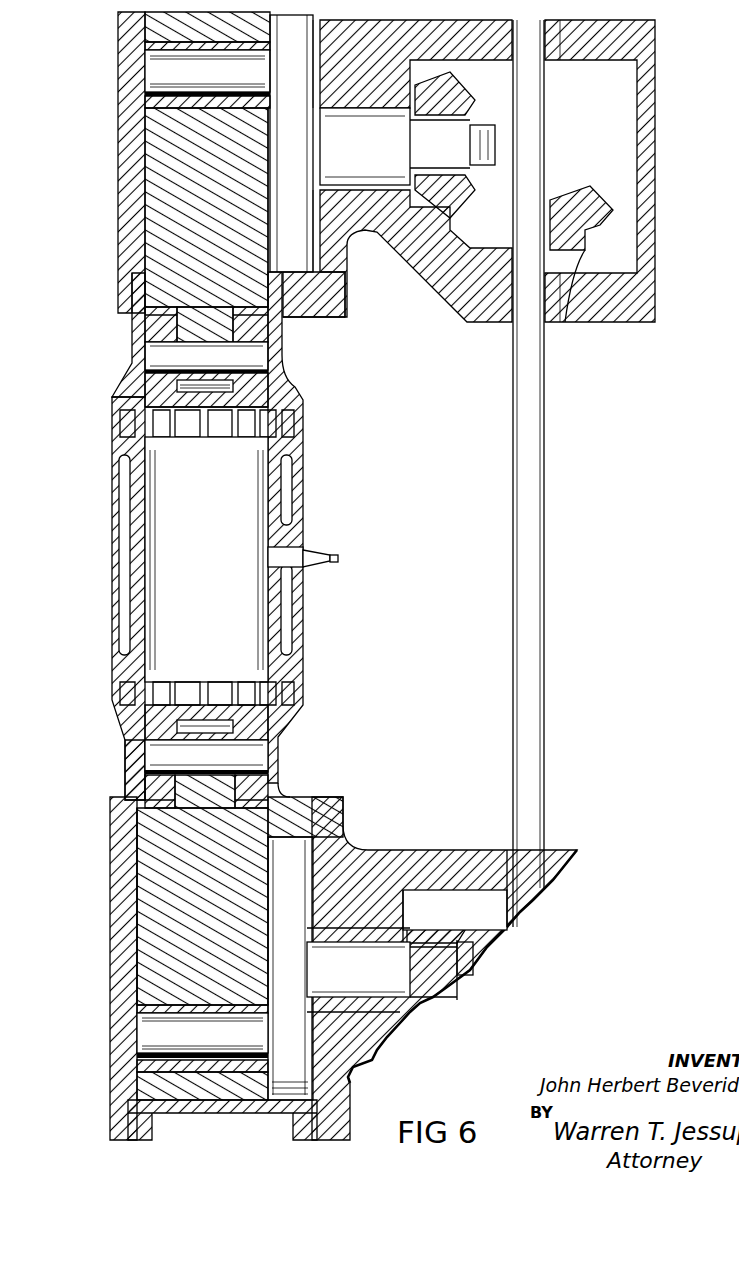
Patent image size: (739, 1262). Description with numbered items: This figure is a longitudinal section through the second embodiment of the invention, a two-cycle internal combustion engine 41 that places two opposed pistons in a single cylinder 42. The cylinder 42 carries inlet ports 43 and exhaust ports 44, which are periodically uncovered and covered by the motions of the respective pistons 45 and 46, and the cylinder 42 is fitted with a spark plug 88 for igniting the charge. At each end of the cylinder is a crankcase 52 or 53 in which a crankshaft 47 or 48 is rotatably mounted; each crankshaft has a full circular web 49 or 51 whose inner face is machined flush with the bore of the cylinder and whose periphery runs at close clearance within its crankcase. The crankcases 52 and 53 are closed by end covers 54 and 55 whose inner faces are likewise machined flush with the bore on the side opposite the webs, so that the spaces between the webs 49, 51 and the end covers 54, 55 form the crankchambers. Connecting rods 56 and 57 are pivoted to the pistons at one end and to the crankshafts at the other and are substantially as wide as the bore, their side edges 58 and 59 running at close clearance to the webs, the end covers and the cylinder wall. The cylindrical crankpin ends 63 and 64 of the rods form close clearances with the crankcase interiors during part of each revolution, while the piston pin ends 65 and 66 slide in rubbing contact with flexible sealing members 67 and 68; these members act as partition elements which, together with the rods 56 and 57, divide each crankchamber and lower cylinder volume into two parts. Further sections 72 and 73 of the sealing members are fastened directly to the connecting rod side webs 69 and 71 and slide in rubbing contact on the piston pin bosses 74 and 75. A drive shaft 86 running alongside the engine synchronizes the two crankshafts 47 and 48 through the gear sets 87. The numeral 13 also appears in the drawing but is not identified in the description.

The housing shoulder 13 is at (298, 352).
The two-cycle internal combustion engine 41 is at (82, 475).
The cylinder 42 is at (115, 498).
The inlet ports 43 is at (160, 690).
The exhaust ports 44 is at (160, 420).
The piston 45 is at (140, 727).
The piston 46 is at (145, 388).
The crankshaft 47 is at (337, 957).
The crankshaft 48 is at (355, 160).
The crankshaft web 49 is at (347, 813).
The crankshaft web 51 is at (342, 318).
The crankcase 52 is at (125, 852).
The crankcase 53 is at (165, 142).
The end cover 54 is at (128, 878).
The end cover 55 is at (128, 161).
The connecting rod 56 is at (140, 897).
The connecting rod 57 is at (165, 180).
The connecting rod side edges 58 is at (182, 903).
The connecting rod side edges 59 is at (165, 203).
The crankpin end 63 is at (140, 1085).
The crankpin end 64 is at (118, 26).
The piston pin end 65 is at (213, 728).
The piston pin end 66 is at (217, 388).
The flexible sealing member 67 is at (240, 720).
The flexible sealing member 68 is at (200, 380).
The connecting rod side web 69 is at (125, 817).
The connecting rod side web 71 is at (135, 290).
The flexible sealing member section 72 is at (145, 795).
The flexible sealing member section 73 is at (160, 318).
The piston pin boss 74 is at (135, 780).
The piston pin boss 75 is at (165, 340).
The drive shaft 86 is at (535, 462).
The gear sets 87 is at (585, 275).
The spark plug 88 is at (325, 548).